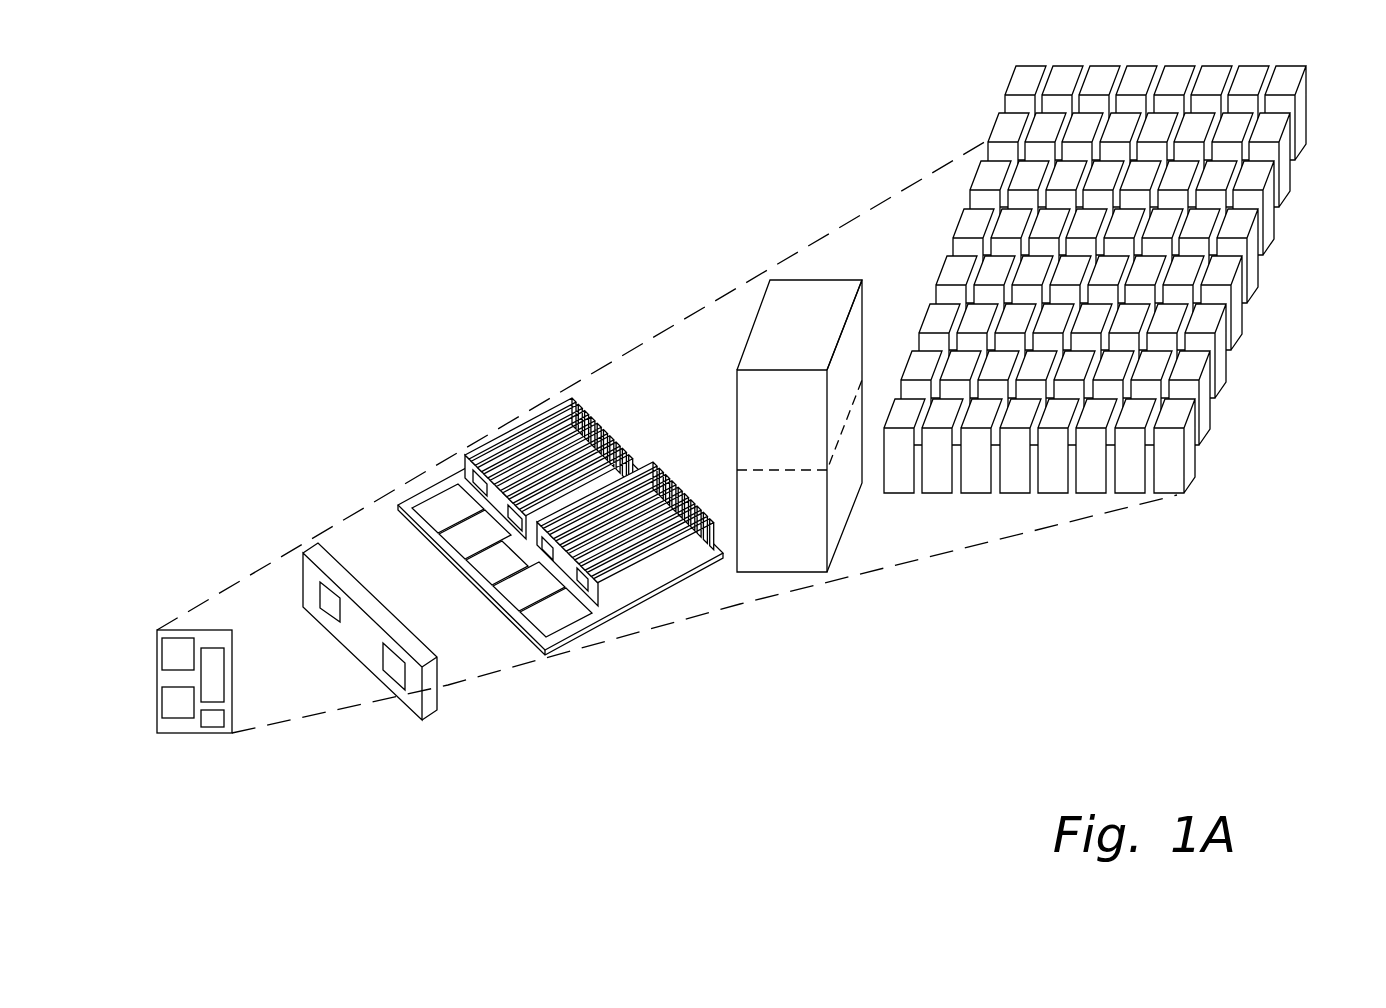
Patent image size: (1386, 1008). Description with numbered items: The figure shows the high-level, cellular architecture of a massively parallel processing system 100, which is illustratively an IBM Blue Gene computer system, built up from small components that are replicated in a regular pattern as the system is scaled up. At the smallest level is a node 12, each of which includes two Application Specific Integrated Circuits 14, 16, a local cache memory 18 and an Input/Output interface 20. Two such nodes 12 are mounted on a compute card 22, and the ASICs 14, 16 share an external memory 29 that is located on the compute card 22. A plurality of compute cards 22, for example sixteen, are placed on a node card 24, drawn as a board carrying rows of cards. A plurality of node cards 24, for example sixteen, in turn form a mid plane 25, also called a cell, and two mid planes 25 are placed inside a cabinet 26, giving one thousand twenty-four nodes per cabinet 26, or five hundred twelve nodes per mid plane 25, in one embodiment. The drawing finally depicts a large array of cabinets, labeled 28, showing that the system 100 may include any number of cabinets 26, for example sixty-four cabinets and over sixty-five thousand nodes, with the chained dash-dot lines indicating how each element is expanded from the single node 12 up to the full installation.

The parallel processing system 100 is at (357, 295).
The node 12 is at (246, 690).
The Application Specific Integrated Circuit 14 is at (176, 657).
The Application Specific Integrated Circuit 16 is at (176, 702).
The local cache memory 18 is at (217, 688).
The Input/Output interface 20 is at (212, 720).
The compute card 22 is at (493, 548).
The external memory 29 is at (353, 640).
The node card 24 is at (577, 635).
The mid plane 25 is at (853, 337).
The cabinet 26 is at (805, 426).
The array of enclosures 28 is at (1348, 116).